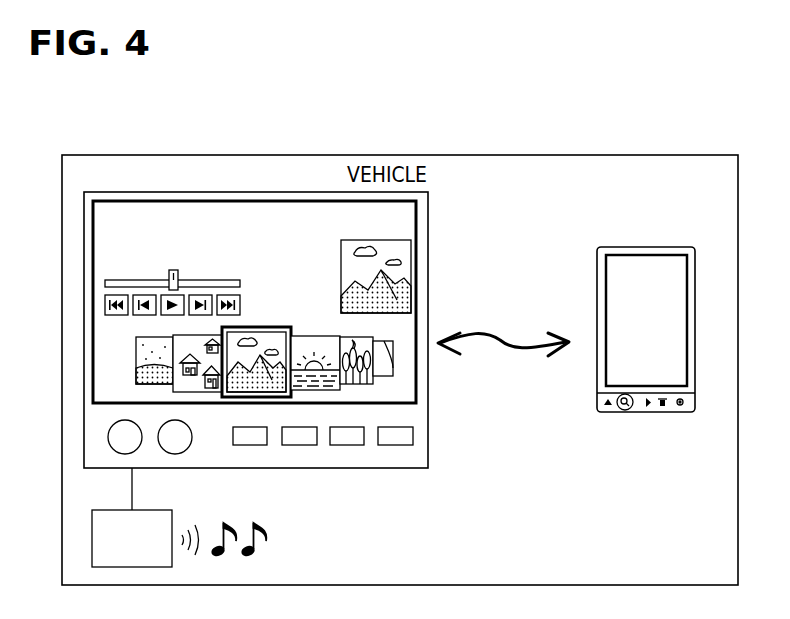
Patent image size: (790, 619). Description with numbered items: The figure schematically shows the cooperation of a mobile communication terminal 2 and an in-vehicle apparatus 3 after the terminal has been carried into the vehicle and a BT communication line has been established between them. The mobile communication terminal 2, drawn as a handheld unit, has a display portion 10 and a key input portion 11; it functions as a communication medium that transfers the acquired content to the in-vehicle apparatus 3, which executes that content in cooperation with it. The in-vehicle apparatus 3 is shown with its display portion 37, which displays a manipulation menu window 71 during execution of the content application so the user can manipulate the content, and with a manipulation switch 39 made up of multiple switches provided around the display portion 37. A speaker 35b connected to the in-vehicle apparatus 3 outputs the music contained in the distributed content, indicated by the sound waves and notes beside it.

The mobile communication terminal 2 is at (623, 328).
The in-vehicle apparatus 3 is at (250, 192).
The display portion 10 is at (606, 272).
The key input portion 11 is at (652, 412).
The speaker 35b is at (150, 510).
The display portion 37 is at (200, 201).
The manipulation switch 39 is at (188, 446).
The manipulation menu window 71 is at (262, 265).